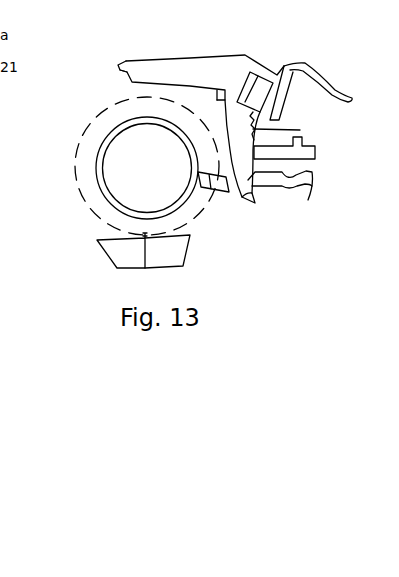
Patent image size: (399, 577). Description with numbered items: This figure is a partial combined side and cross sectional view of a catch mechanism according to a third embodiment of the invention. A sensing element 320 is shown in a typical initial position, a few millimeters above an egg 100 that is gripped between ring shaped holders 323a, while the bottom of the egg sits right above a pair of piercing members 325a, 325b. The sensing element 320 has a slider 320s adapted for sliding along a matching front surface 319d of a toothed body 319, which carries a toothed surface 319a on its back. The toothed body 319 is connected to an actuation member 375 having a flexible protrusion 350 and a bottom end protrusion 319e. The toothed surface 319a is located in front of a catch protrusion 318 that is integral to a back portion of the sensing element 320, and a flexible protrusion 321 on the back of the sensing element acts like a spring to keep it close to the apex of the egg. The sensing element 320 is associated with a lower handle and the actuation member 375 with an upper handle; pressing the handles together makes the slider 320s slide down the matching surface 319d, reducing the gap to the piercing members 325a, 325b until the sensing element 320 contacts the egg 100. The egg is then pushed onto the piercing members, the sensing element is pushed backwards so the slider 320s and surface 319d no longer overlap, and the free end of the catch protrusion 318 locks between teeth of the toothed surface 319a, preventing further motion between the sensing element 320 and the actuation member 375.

The egg 100 is at (75, 167).
The catch protrusion 318 is at (268, 107).
The toothed body 319 is at (256, 83).
The toothed surface 319a is at (300, 130).
The matching front surface 319d is at (234, 182).
The bottom end protrusion 319e is at (256, 197).
The sensing element 320 is at (155, 83).
The slider 320s is at (227, 117).
The flexible protrusion 321 is at (330, 81).
The ring shaped holders 323a is at (117, 143).
The piercing member 325a is at (117, 245).
The piercing member 325b is at (172, 261).
The flexible protrusion 350 is at (308, 200).
The actuation member 375 is at (316, 163).